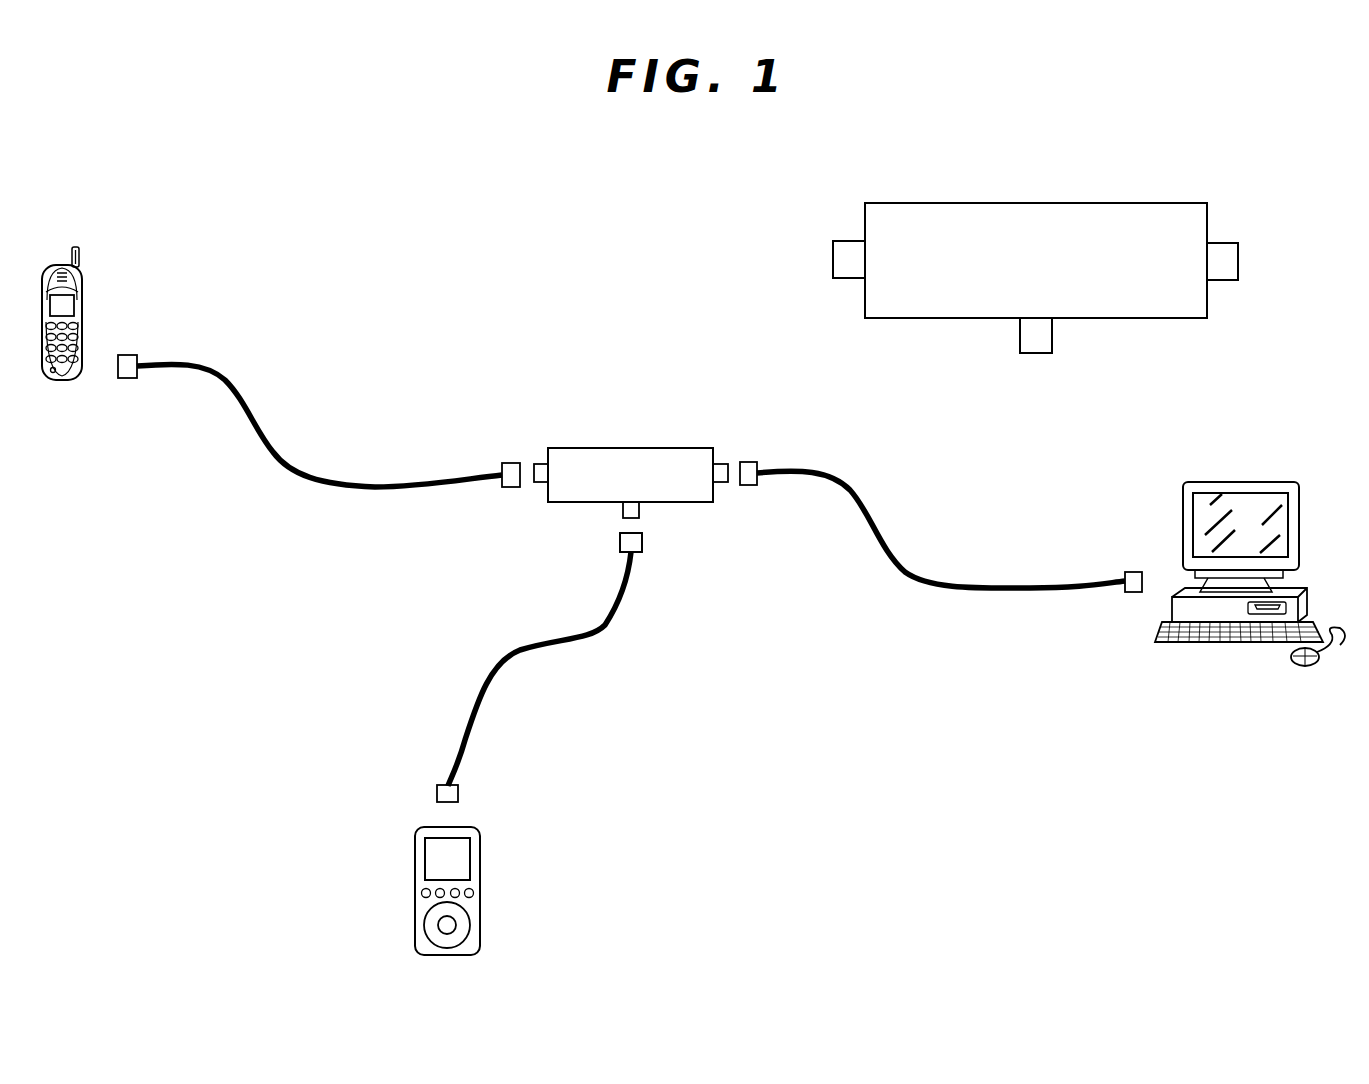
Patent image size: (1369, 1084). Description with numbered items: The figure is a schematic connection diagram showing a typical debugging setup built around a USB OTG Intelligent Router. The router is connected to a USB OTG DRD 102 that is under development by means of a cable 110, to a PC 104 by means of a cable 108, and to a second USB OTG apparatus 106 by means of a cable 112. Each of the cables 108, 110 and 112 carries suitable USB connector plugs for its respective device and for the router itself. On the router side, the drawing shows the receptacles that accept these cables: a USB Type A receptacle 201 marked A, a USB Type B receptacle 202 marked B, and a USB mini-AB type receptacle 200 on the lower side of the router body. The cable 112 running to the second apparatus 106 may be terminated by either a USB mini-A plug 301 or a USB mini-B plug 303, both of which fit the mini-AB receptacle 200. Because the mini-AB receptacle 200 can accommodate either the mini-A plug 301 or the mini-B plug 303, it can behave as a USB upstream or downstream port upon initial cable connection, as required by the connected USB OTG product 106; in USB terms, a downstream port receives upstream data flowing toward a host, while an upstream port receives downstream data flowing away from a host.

The USB OTG DRD 102 is at (83, 302).
The PC 104 is at (1300, 513).
The second USB OTG apparatus 106 is at (481, 845).
The cable 108 is at (873, 510).
The cable 110 is at (256, 408).
The cable 112 is at (606, 624).
The USB mini-AB type receptacle 200 is at (1036, 353).
The USB Type A receptacle 201 is at (833, 260).
The USB Type B receptacle 202 is at (1238, 262).
The USB mini-A plug 301 is at (642, 542).
The USB mini-B plug 303 is at (631, 542).